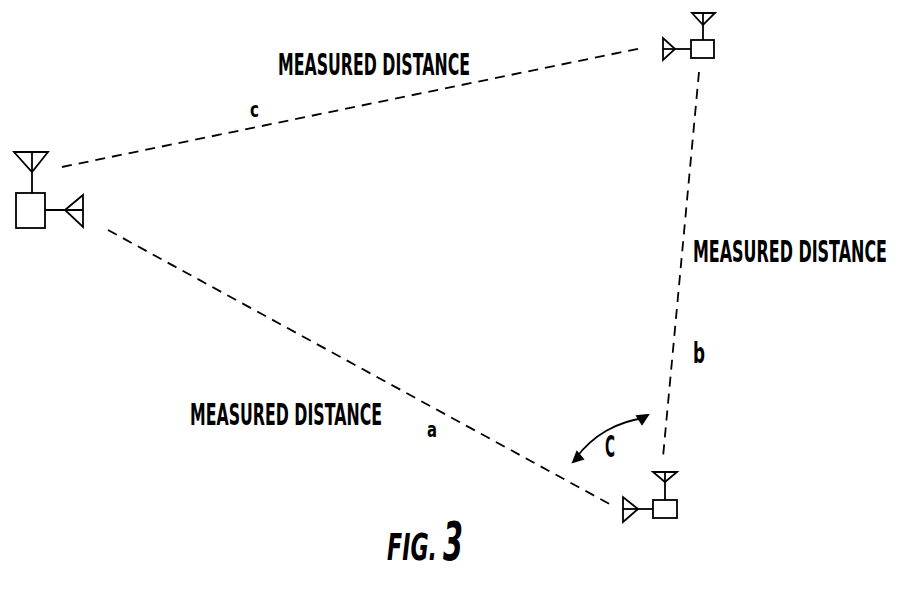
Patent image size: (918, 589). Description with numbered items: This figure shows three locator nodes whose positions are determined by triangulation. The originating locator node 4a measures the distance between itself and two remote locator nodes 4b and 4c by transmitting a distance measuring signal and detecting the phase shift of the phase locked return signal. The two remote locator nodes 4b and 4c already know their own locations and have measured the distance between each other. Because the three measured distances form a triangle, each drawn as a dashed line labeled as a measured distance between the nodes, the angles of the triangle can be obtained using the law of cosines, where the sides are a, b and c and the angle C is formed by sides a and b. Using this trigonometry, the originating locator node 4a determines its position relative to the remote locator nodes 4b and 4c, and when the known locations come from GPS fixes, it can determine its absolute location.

The originating locator node 4a is at (32, 137).
The remote locator node 4b is at (688, 513).
The remote locator node 4c is at (723, 48).